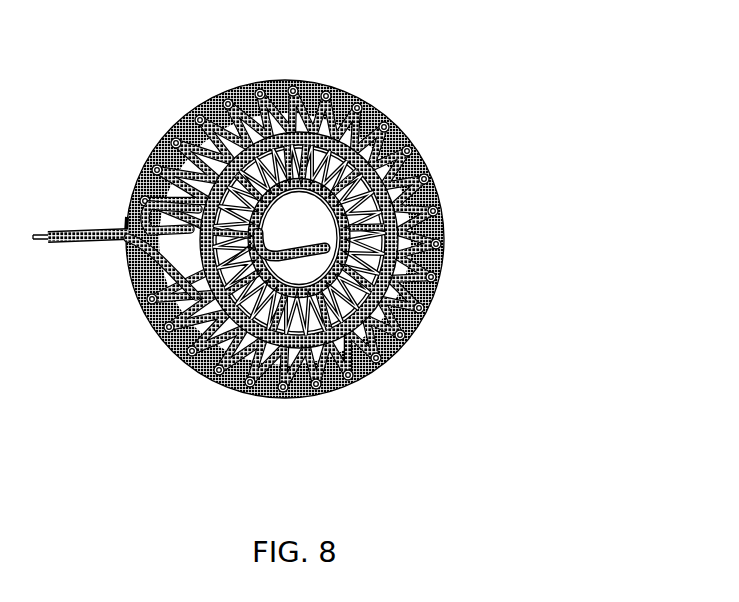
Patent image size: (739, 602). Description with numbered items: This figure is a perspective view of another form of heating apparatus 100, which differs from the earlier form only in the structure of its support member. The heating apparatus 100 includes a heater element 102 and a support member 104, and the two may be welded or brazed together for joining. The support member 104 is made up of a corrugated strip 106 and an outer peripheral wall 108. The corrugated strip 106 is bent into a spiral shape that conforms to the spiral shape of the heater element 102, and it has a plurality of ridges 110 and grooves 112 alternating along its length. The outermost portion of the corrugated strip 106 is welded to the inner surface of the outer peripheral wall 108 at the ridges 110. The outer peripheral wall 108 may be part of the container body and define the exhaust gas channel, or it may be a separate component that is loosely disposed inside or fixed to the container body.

The heating apparatus 100 is at (490, 72).
The heater element 102 is at (194, 124).
The support member 104 is at (275, 70).
The corrugated strip 106 is at (420, 284).
The outer peripheral wall 108 is at (449, 234).
The ridges 110 is at (172, 348).
The grooves 112 is at (352, 363).